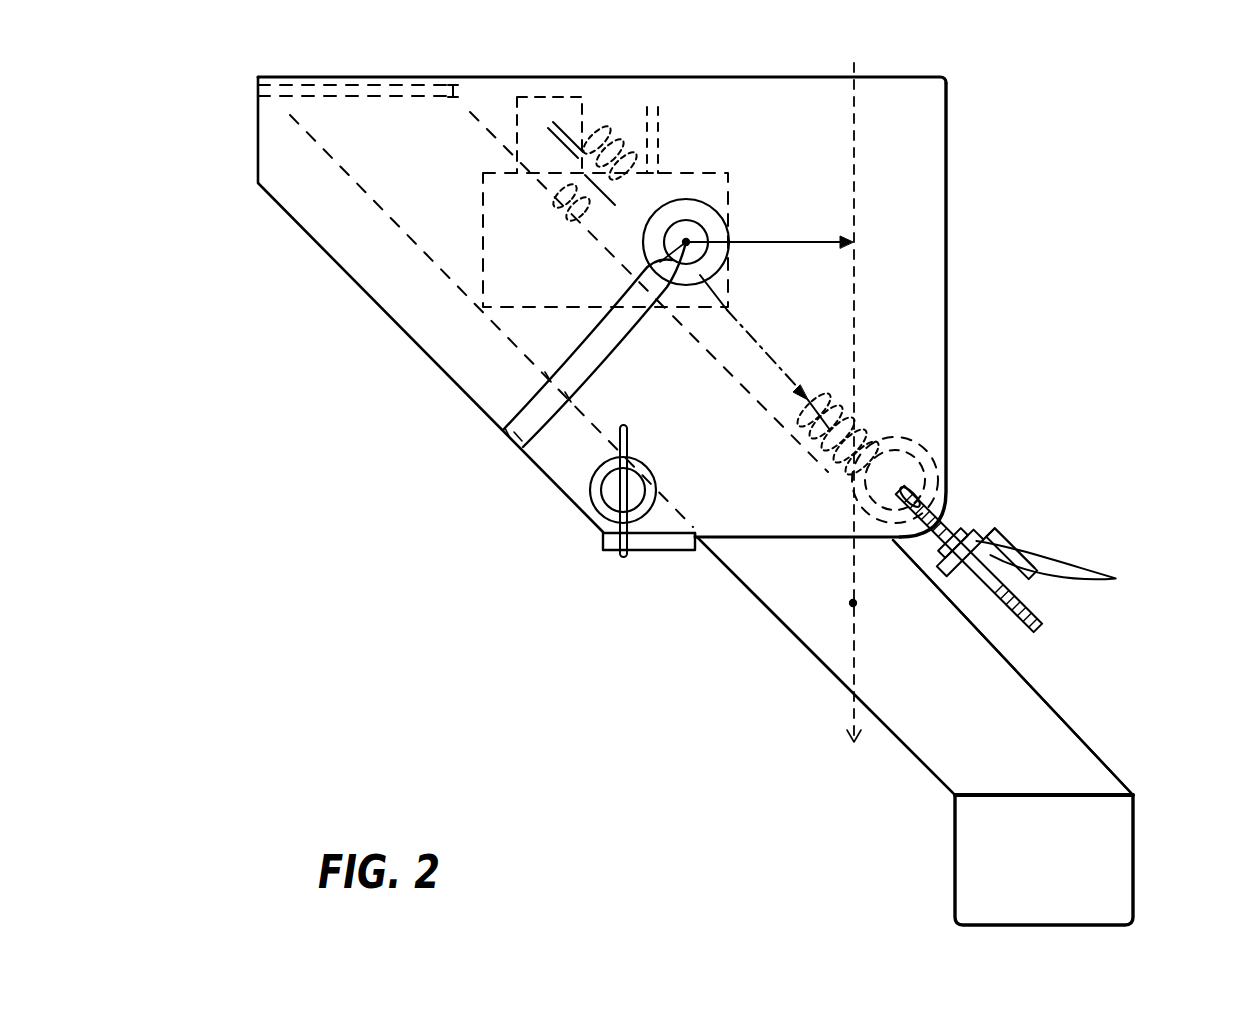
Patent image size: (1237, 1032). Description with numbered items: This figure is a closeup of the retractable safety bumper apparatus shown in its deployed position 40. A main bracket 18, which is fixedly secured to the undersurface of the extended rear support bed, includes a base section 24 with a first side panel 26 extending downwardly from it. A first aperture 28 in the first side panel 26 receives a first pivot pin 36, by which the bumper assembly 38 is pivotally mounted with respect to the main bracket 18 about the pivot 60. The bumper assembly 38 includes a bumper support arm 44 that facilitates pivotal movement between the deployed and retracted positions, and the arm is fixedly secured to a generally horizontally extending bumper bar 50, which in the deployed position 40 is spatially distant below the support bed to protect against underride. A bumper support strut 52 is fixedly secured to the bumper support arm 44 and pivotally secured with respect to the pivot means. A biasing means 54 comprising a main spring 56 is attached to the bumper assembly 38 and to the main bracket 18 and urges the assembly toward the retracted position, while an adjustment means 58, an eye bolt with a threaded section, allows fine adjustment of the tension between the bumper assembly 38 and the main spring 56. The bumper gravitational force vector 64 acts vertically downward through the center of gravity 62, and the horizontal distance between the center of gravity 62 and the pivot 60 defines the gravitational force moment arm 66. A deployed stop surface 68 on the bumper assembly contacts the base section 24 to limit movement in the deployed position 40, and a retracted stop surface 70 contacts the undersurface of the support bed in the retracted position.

The main bracket 18 is at (826, 163).
The base section 24 is at (928, 77).
The first side panel 26 is at (934, 301).
The first aperture 28 is at (503, 430).
The first pivot pin 36 is at (523, 447).
The bumper assembly 38 is at (1107, 763).
The deployed position 40 is at (952, 797).
The bumper support arm 44 is at (831, 593).
The bumper bar 50 is at (1065, 866).
The bumper support strut 52 is at (483, 243).
The biasing means 54 is at (875, 432).
The main spring 56 is at (870, 402).
The adjustment means 58 is at (1060, 487).
The pivot 60 is at (686, 242).
The center of gravity 62 is at (852, 603).
The bumper gravitational force vector 64 is at (857, 184).
The gravitational force moment arm 66 is at (780, 243).
The deployed stop surface 68 is at (357, 86).
The retracted stop surface 70 is at (1133, 795).